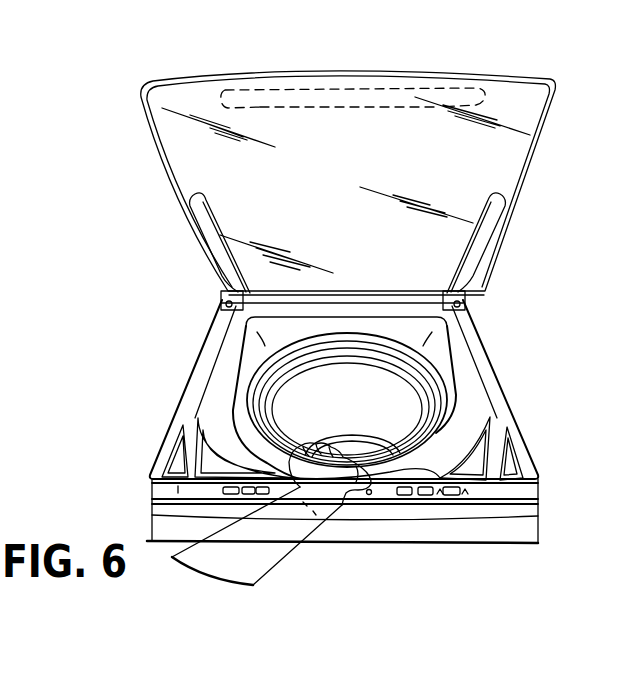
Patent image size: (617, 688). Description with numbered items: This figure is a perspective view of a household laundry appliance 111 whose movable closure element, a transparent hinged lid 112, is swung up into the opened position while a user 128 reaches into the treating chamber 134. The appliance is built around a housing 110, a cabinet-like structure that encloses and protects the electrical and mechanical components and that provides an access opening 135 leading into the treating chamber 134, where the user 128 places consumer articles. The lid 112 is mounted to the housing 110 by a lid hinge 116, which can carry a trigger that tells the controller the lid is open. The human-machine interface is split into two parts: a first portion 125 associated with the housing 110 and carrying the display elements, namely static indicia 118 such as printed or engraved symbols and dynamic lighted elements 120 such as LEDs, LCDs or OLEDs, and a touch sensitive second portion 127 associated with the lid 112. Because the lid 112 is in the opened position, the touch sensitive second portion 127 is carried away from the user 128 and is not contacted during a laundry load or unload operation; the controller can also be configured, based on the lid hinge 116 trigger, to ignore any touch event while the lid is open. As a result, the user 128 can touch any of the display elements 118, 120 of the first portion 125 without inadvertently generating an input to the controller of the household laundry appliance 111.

The housing 110 is at (152, 501).
The household laundry appliance 111 is at (133, 220).
The transparent hinged lid 112 is at (483, 167).
The lid hinge 116 is at (222, 306).
The static indicia 118 is at (405, 494).
The dynamic lighted elements 120 is at (418, 494).
The first portion of the HMI 125 is at (474, 450).
The touch sensitive second portion of the HMI 127 is at (445, 88).
The user 128 is at (267, 558).
The treating chamber 134 is at (364, 415).
The access opening 135 is at (254, 364).